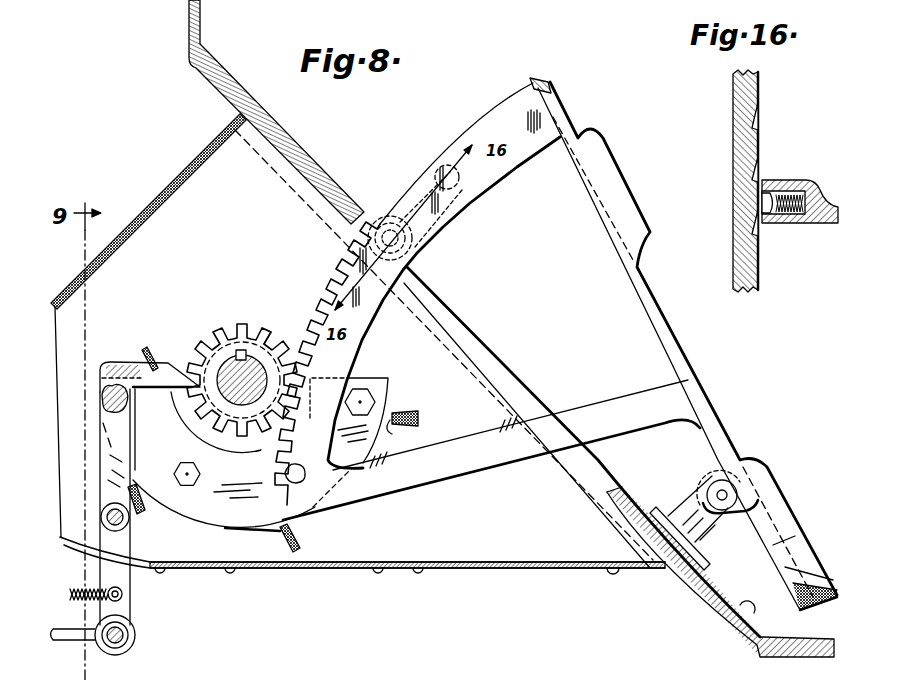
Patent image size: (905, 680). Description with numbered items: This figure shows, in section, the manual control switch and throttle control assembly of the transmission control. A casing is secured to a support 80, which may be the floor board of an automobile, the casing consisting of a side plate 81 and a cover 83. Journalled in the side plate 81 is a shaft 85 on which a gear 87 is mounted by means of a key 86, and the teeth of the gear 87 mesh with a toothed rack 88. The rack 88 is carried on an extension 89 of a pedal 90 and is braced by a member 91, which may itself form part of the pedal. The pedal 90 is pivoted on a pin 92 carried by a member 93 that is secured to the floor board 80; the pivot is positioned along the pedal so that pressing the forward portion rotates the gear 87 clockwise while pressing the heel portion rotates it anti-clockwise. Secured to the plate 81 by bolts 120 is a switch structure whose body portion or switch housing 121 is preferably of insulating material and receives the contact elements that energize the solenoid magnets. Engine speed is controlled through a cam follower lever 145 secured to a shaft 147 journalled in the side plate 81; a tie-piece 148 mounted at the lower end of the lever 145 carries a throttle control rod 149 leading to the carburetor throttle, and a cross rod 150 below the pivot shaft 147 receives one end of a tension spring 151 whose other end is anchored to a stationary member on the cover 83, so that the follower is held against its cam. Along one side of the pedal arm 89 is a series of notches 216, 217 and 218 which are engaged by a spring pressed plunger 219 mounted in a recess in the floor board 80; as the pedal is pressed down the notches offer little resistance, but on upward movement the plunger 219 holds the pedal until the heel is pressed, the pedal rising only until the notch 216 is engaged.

In FIG. 8, the support 80 is at (313, 166).
In FIG. 8, the side plate 81 is at (248, 232).
In FIG. 8, the cover 83 is at (172, 186).
In FIG. 8, the shaft 85 is at (216, 364).
In FIG. 8, the key 86 is at (238, 350).
In FIG. 8, the gear 87 is at (258, 333).
In FIG. 8, the toothed rack 88 is at (325, 280).
In FIG. 8, the extension of pedal 89 is at (450, 150).
In FIG. 8, the pedal 90 is at (672, 342).
In FIG. 8, the bracing member 91 is at (607, 406).
In FIG. 8, the pin 92 is at (718, 482).
In FIG. 8, the member 93 is at (690, 512).
In FIG. 8, the bolts 120 is at (200, 472).
In FIG. 8, the switch housing 121 is at (208, 520).
In FIG. 8, the cam follower lever 145 is at (108, 477).
In FIG. 8, the shaft 147 is at (130, 521).
In FIG. 8, the tie-piece 148 is at (136, 636).
In FIG. 8, the throttle control rod 149 is at (62, 644).
In FIG. 8, the cross rod 150 is at (125, 594).
In FIG. 8, the tension spring 151 is at (80, 591).
In FIG. 8, the notch 216 is at (400, 262).
In FIG. 16, the notch 216 is at (753, 229).
In FIG. 8, the notch 217 is at (403, 223).
In FIG. 16, the notch 217 is at (753, 176).
In FIG. 8, the notch 218 is at (443, 188).
In FIG. 16, the notch 218 is at (755, 124).
In FIG. 8, the spring pressed plunger 219 is at (392, 240).
In FIG. 16, the spring pressed plunger 219 is at (764, 204).